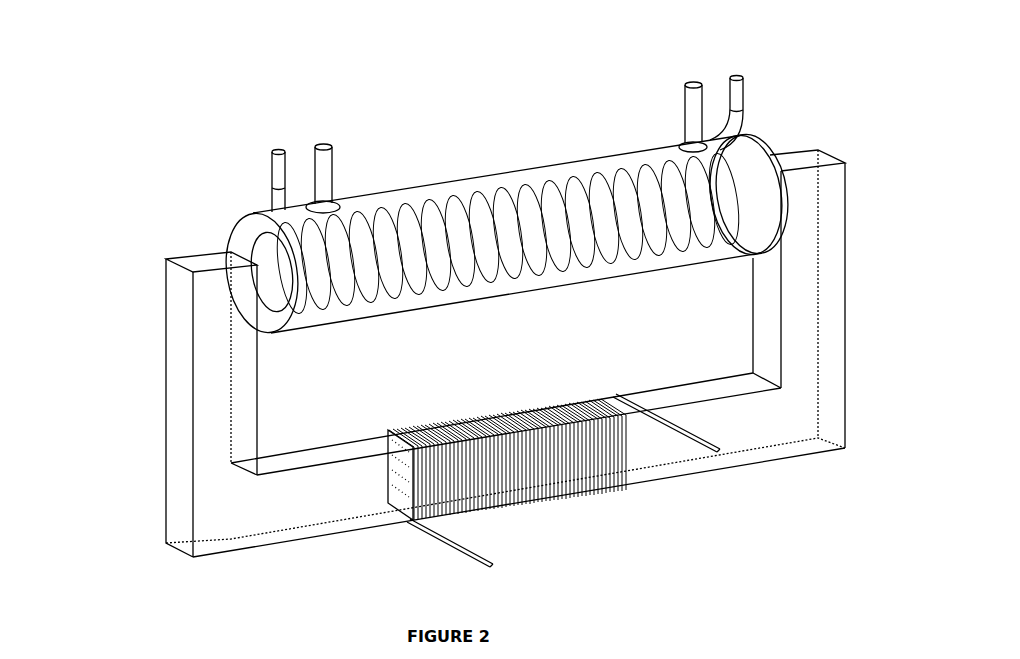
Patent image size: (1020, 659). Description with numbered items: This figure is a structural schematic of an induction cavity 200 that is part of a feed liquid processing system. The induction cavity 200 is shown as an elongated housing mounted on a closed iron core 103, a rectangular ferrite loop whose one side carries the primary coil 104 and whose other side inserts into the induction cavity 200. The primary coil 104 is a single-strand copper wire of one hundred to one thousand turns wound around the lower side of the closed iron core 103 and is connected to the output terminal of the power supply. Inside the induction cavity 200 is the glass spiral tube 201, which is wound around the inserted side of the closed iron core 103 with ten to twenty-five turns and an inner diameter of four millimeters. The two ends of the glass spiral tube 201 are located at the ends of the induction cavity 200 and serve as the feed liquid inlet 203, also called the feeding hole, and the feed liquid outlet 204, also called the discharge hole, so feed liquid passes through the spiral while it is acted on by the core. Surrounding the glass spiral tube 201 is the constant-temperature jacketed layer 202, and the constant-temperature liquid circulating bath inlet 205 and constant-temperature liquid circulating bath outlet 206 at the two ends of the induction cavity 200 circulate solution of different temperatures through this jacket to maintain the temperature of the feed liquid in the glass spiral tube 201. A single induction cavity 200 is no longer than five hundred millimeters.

The closed iron core 103 is at (162, 407).
The primary coil 104 is at (560, 503).
The induction cavity 200 is at (500, 176).
The glass spiral tube 201 is at (523, 185).
The constant-temperature jacketed layer 202 is at (255, 237).
The feed liquid inlet 203 is at (275, 147).
The constant-temperature liquid circulating bath inlet 205 is at (322, 137).
The constant-temperature liquid circulating bath outlet 206 is at (693, 78).
The feed liquid outlet 204 is at (742, 73).